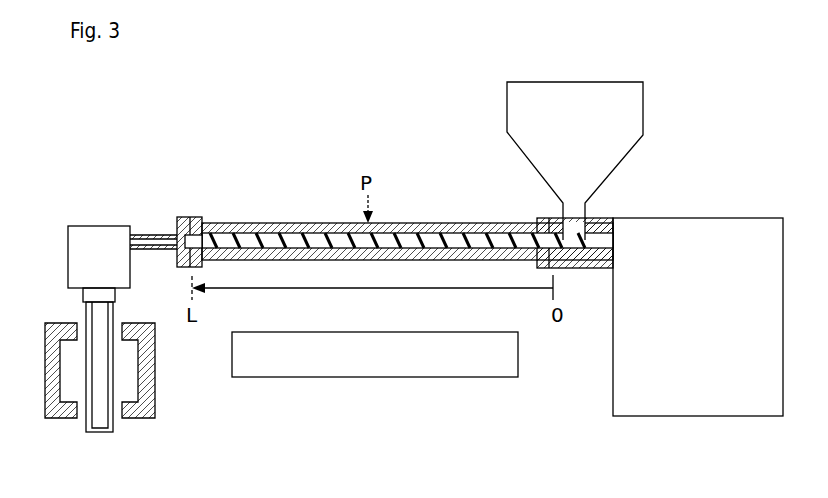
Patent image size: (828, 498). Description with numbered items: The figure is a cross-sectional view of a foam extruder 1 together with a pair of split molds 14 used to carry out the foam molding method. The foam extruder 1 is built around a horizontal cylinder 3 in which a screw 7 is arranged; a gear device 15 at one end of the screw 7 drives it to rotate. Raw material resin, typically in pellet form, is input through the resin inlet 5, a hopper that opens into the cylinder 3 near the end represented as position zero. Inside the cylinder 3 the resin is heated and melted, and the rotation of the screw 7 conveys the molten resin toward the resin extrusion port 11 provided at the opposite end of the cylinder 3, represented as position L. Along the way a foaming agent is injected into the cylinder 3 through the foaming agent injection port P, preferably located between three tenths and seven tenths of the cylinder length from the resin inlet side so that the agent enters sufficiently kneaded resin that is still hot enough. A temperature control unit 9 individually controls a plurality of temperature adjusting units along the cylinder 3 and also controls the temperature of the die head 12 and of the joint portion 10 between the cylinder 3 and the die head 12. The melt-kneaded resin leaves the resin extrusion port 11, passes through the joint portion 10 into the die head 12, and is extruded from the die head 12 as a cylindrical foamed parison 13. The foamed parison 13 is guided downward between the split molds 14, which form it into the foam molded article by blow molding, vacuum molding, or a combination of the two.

The foam extruder 1 is at (407, 162).
The cylinder 3 is at (278, 211).
The resin inlet 5 is at (605, 85).
The screw 7 is at (434, 235).
The temperature control unit 9 is at (372, 377).
The joint portion 10 is at (156, 235).
The resin extrusion port 11 is at (187, 240).
The die head 12 is at (77, 214).
The foamed parison 13 is at (86, 312).
The split molds 14 is at (65, 420).
The gear device 15 is at (712, 218).